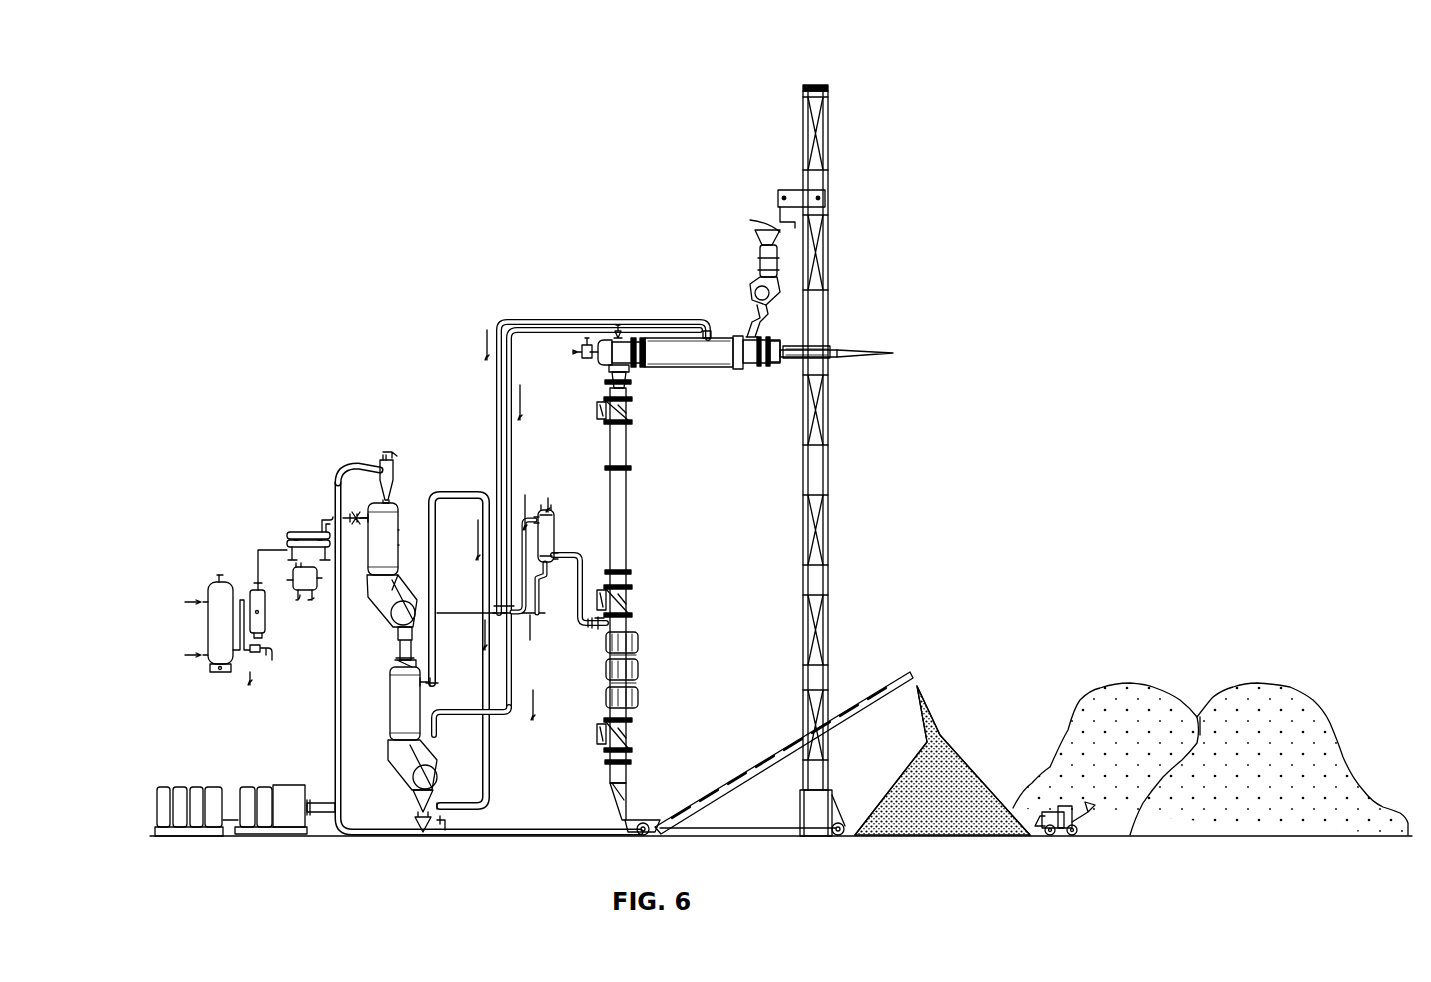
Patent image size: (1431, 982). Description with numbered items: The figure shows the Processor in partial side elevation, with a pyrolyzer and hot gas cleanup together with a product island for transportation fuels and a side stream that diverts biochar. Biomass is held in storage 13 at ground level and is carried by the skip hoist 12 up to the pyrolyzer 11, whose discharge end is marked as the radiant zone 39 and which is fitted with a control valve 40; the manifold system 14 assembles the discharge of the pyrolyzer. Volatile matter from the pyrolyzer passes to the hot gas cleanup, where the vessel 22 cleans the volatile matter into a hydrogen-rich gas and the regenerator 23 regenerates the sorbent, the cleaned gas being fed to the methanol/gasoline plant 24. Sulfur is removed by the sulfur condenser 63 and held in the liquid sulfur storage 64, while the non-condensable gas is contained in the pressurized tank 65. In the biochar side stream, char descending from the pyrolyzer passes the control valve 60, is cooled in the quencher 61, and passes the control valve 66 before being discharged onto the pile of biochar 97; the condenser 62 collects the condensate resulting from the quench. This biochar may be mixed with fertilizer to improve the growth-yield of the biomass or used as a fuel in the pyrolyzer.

The pyrolyzer 11 is at (686, 338).
The skip hoist 12 is at (820, 85).
The storage 13 is at (1300, 690).
The manifold system 14 is at (625, 492).
The vessel to clean volatile matter 22 is at (392, 723).
The regenerator 23 is at (352, 494).
The methanol/gasoline plant 24 is at (275, 836).
The radiant zone / discharge end of pyrolyzer 39 is at (617, 326).
The control valve 40 is at (633, 414).
The control valve 60 is at (633, 612).
The quencher 61 is at (606, 698).
The condenser 62 is at (555, 528).
The sulfur condenser 63 is at (287, 528).
The liquid sulfur storage 64 is at (306, 598).
The pressurized tank 65 is at (205, 622).
The control valve 66 is at (633, 744).
The pile of biochar 97 is at (935, 728).